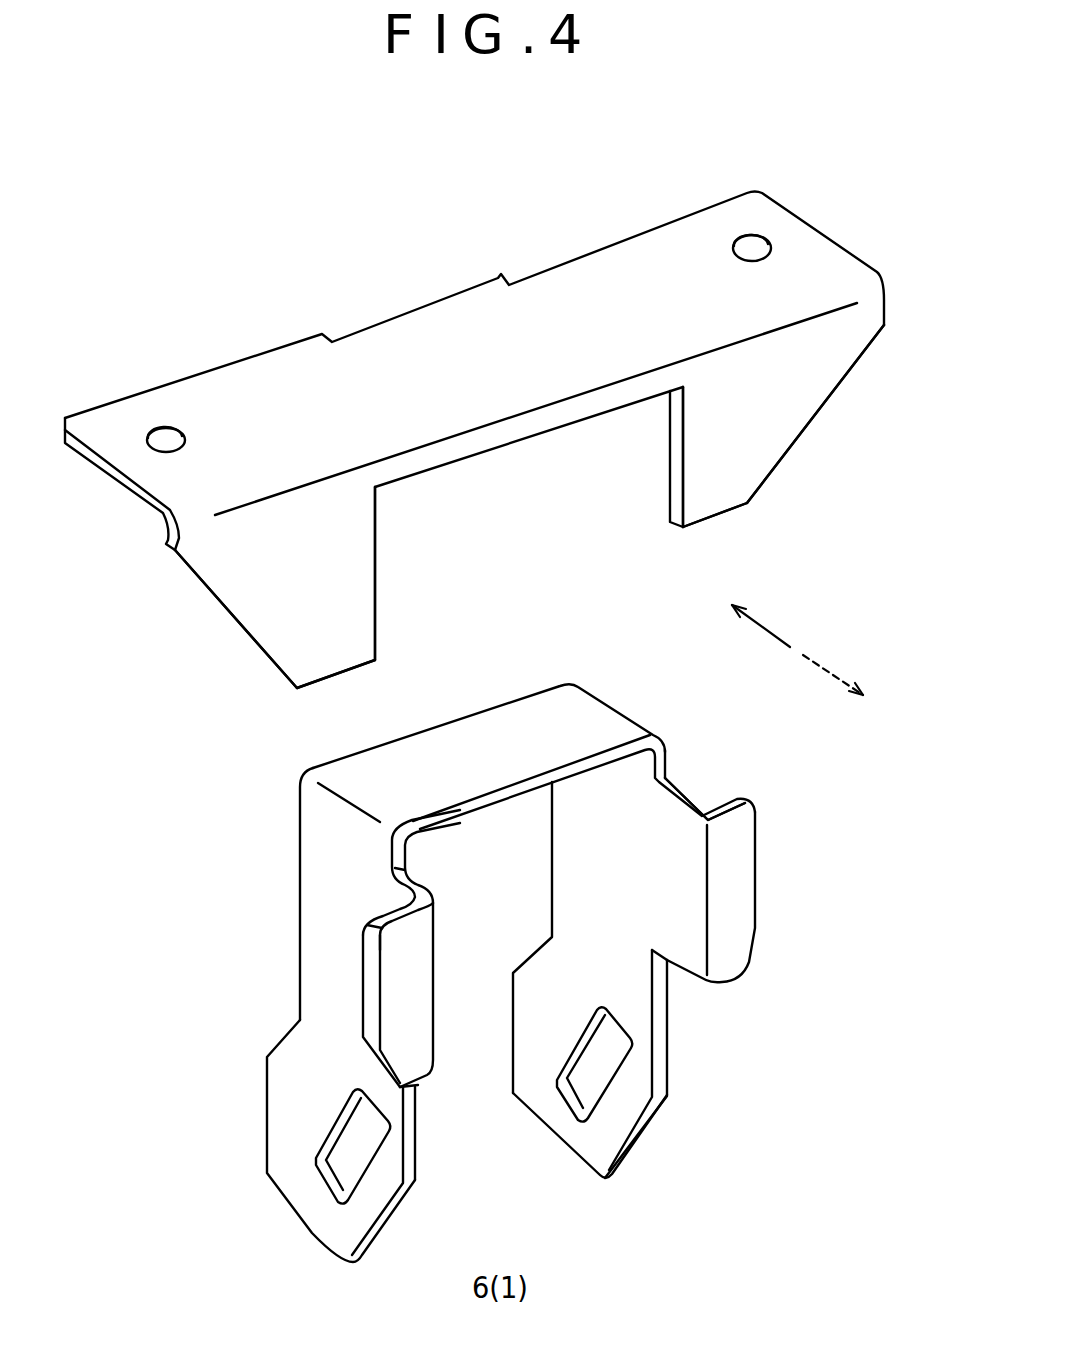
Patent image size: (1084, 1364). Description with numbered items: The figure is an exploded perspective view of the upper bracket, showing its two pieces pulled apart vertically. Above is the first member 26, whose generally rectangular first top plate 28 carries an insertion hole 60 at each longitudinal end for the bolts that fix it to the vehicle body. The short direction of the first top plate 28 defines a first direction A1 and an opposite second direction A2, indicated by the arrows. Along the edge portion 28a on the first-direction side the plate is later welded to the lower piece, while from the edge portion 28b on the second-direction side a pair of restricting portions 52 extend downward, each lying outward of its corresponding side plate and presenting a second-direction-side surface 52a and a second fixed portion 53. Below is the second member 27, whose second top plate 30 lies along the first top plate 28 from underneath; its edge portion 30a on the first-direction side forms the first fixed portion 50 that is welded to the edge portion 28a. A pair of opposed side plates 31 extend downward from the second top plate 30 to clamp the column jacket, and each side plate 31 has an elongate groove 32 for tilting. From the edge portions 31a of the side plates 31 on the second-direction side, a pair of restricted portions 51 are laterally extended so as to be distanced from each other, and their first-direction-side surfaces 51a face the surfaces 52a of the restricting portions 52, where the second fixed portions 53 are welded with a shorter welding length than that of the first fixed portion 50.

The first member 26 is at (633, 230).
The first top plate 28 is at (256, 378).
The edge portion 28a is at (435, 306).
The edge portion 28b is at (490, 437).
The insertion hole 60 is at (160, 435).
The restricting portion 52 is at (803, 383).
The second-direction-A2-side surface 52a is at (740, 473).
The second fixed portion 53 is at (697, 460).
The second top plate 30 is at (527, 722).
The edge portion 30a is at (383, 752).
The first fixed portion 50 is at (452, 731).
The restricted portion 51 is at (413, 1028).
The first-direction-A1-side surface 51a is at (362, 980).
The side plate 31 is at (283, 1105).
The edge portion 31a is at (383, 1086).
The elongate groove 32 is at (328, 1177).
The second member 27 is at (641, 1145).
The first direction A1 is at (772, 632).
The second direction A2 is at (828, 670).